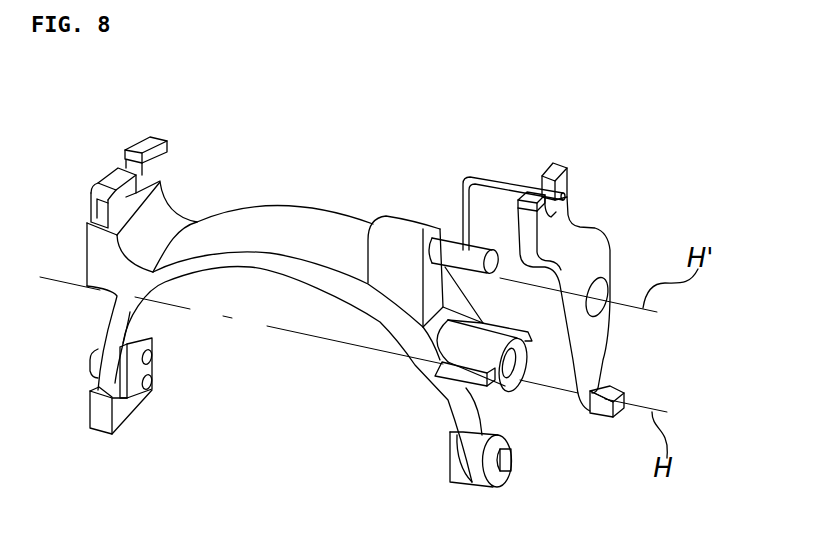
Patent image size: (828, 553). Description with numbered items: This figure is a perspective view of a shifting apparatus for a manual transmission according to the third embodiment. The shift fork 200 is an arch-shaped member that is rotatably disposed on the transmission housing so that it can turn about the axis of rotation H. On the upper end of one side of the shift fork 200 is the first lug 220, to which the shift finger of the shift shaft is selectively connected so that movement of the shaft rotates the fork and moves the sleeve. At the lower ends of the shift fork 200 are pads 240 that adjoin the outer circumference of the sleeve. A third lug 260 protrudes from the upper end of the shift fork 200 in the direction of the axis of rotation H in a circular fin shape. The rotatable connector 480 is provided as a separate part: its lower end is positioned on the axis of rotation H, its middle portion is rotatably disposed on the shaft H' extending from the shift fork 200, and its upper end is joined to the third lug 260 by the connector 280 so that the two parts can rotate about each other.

The shift fork 200 is at (302, 222).
The first lug 220 is at (151, 143).
The pads 240 is at (148, 370).
The third lug 260 is at (453, 240).
The connector 280 is at (507, 188).
The rotatable connector 480 is at (593, 238).